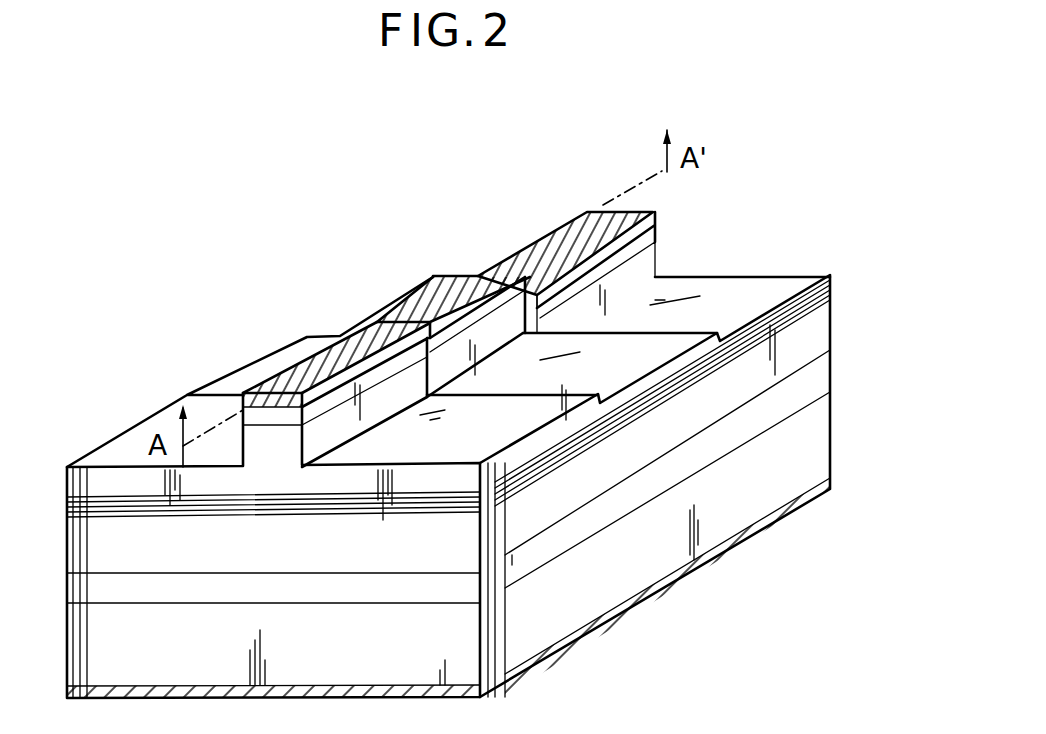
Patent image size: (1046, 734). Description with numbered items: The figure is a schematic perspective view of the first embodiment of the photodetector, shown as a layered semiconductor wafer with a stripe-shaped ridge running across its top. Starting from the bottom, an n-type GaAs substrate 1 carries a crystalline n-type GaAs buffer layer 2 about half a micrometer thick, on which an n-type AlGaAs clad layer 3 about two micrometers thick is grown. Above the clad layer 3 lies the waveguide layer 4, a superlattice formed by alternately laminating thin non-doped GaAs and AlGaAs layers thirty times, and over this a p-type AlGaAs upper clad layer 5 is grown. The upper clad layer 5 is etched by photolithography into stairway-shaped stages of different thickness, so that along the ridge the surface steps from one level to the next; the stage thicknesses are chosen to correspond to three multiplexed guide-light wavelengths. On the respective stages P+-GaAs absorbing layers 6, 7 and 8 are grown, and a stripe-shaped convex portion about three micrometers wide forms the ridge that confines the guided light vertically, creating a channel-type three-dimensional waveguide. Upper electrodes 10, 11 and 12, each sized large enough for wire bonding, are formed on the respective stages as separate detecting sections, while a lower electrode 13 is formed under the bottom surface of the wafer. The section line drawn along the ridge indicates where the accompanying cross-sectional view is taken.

The substrate 1 is at (833, 418).
The buffer layer 2 is at (833, 380).
The clad layer 3 is at (833, 340).
The waveguide layer 4 is at (833, 300).
The upper clad layer 5 is at (833, 277).
The absorbing layer 6 is at (242, 411).
The absorbing layer 7 is at (655, 247).
The absorbing layer 8 is at (657, 228).
The upper electrode 10 is at (310, 363).
The upper electrode 11 is at (407, 308).
The upper electrode 12 is at (527, 258).
The lower electrode 13 is at (833, 487).